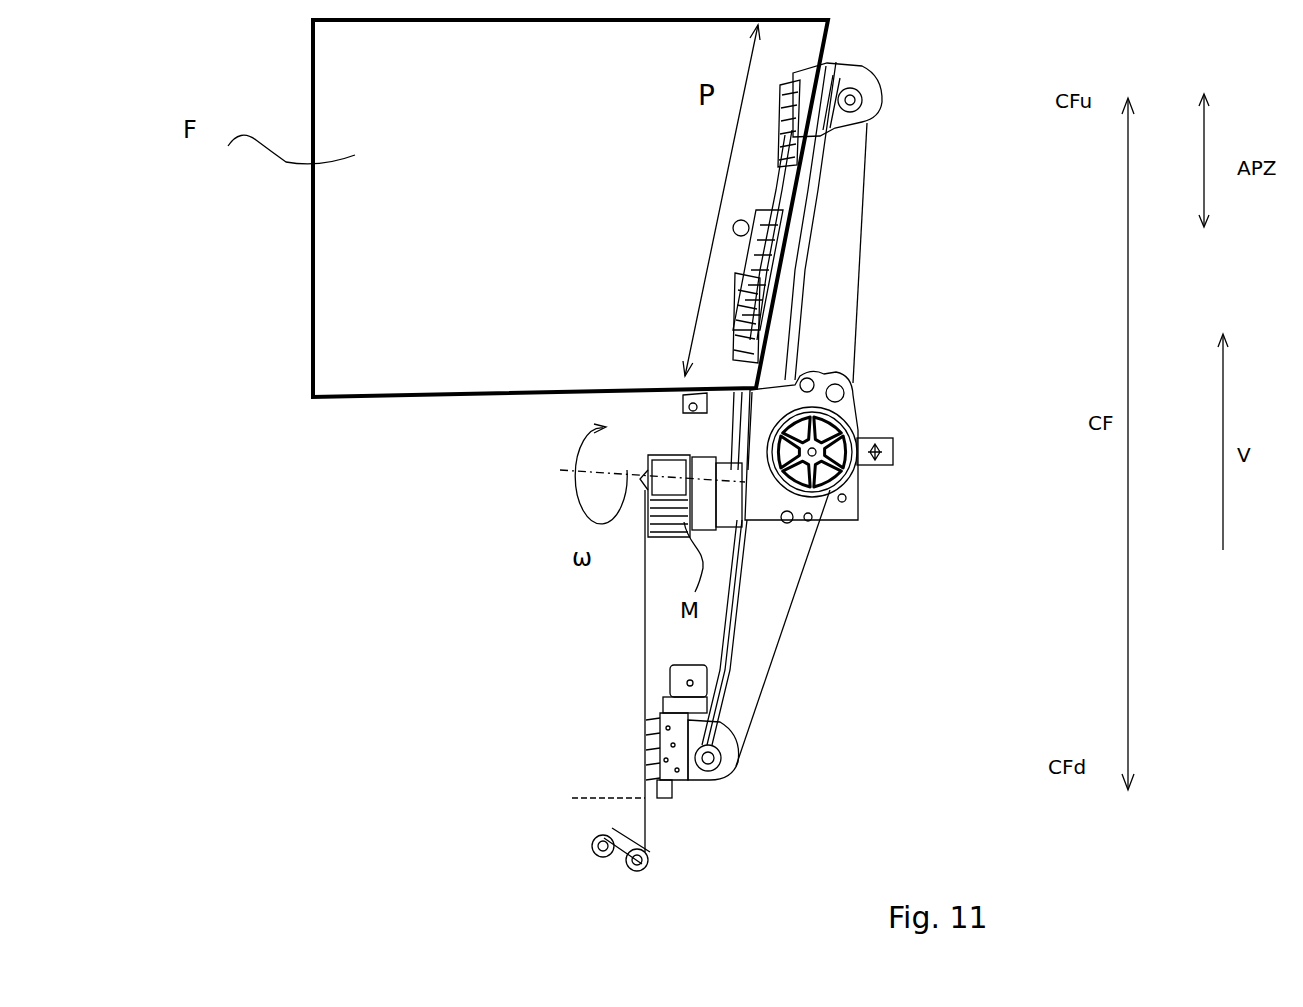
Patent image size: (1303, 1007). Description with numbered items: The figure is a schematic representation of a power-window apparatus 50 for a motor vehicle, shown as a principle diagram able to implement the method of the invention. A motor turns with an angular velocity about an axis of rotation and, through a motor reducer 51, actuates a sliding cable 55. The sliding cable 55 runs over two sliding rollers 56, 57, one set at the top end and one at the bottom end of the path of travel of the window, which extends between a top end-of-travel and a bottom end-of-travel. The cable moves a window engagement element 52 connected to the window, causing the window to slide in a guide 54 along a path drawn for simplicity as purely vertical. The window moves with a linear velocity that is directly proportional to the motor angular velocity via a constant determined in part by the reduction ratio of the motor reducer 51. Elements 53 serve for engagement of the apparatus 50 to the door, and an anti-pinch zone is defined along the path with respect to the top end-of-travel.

The power-window apparatus 50 is at (342, 547).
The motor reducer 51 is at (866, 480).
The window engagement element 52 is at (745, 289).
The elements for engagement of the apparatus to the door 53 is at (732, 218).
The guide 54 is at (800, 287).
The sliding cable 55 is at (865, 243).
The sliding roller 56 is at (882, 106).
The sliding roller 57 is at (731, 767).